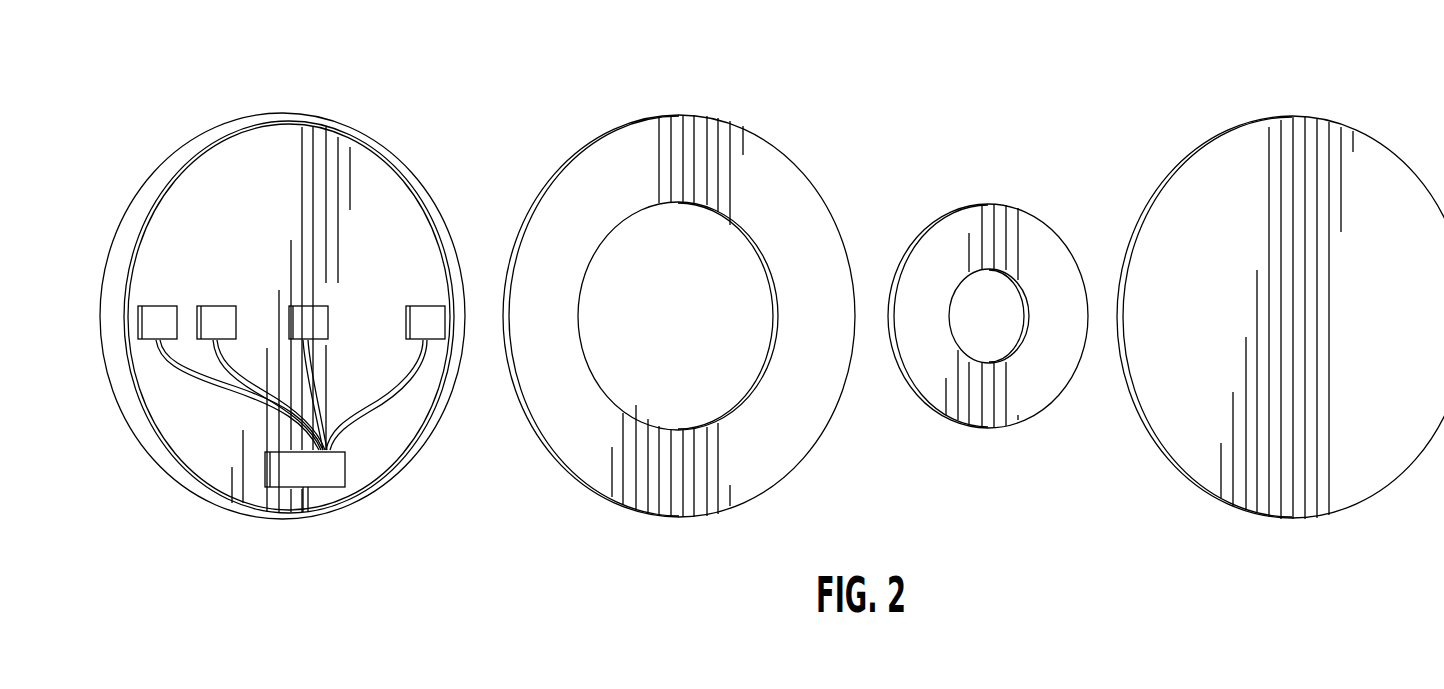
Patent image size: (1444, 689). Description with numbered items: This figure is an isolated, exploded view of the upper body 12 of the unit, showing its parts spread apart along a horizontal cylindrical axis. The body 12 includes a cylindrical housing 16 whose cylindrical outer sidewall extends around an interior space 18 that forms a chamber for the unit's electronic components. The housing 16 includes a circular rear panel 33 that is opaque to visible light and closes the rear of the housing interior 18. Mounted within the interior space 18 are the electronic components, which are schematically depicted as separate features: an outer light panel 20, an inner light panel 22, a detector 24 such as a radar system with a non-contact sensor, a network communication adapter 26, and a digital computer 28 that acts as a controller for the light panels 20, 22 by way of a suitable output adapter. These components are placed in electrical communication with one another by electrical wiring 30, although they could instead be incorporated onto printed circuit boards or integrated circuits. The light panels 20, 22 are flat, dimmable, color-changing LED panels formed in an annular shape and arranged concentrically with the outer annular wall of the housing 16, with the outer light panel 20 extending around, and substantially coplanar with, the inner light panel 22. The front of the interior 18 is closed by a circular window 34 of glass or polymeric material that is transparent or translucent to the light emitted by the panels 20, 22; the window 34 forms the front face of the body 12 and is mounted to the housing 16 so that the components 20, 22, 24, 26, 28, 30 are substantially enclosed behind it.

The body 12 is at (1280, 263).
The cylindrical housing 16 is at (174, 158).
The interior space 18 is at (392, 222).
The outer light panel 20 is at (763, 461).
The inner light panel 22 is at (1049, 395).
The detector 24 is at (307, 305).
The network communication adapter 26 is at (228, 305).
The digital computer 28 is at (267, 470).
The electrical wiring 30 is at (232, 390).
The circular rear panel 33 is at (290, 181).
The circular window 34 is at (1380, 446).